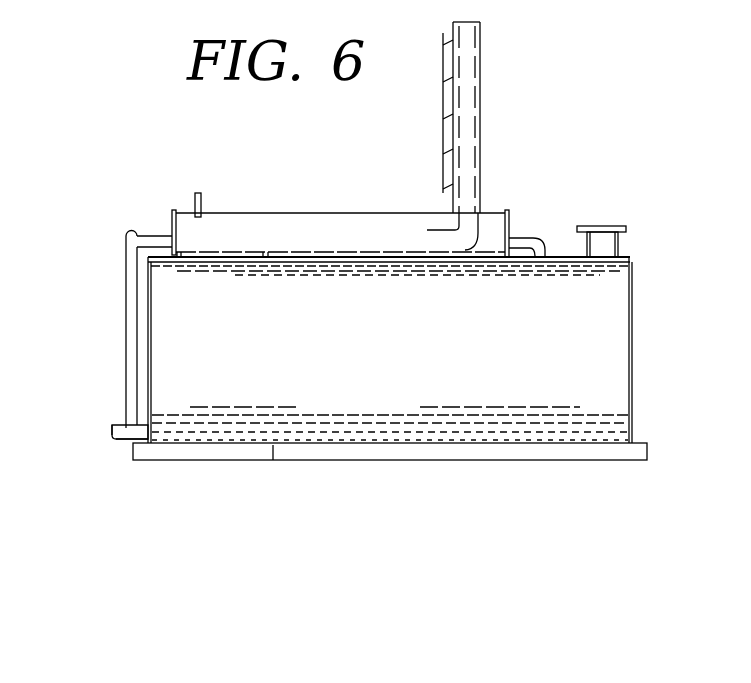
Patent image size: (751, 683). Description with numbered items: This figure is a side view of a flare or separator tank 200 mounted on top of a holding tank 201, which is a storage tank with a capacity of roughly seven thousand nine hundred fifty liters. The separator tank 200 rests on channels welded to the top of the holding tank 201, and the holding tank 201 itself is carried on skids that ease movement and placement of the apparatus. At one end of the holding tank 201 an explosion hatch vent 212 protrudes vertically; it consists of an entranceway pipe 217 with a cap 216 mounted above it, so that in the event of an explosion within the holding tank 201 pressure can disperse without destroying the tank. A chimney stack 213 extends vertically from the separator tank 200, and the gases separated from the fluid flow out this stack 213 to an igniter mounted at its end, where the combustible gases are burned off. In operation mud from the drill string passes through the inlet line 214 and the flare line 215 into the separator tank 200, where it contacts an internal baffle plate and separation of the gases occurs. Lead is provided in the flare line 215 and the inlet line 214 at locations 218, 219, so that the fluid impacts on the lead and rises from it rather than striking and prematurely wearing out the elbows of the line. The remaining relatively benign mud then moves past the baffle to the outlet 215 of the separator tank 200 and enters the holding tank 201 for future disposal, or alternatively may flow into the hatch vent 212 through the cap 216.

The separator tank 200 is at (270, 192).
The holding tank 201 is at (477, 418).
The explosion hatch vent 212 is at (620, 245).
The chimney stack 213 is at (481, 103).
The inlet line 214 is at (153, 232).
The flare line 215 is at (519, 234).
The cap 216 is at (600, 226).
The entranceway pipe 217 is at (585, 243).
The lead location 218 is at (148, 438).
The lead location 219 is at (126, 234).